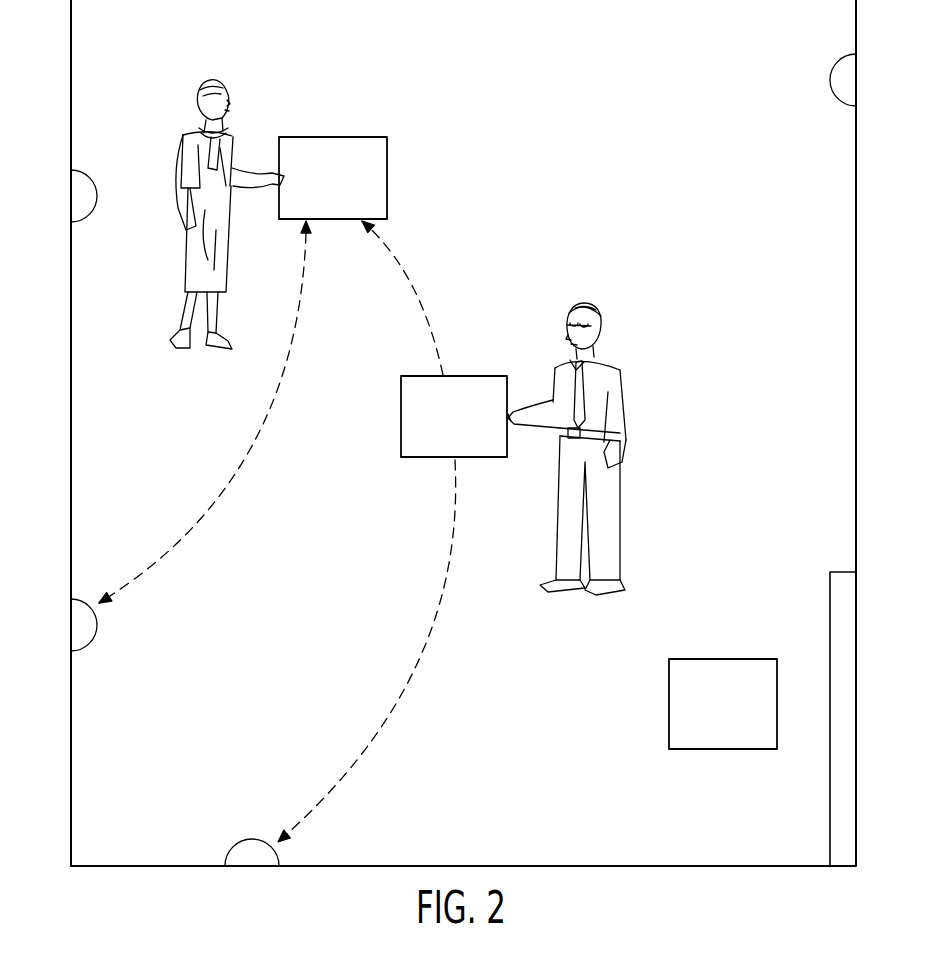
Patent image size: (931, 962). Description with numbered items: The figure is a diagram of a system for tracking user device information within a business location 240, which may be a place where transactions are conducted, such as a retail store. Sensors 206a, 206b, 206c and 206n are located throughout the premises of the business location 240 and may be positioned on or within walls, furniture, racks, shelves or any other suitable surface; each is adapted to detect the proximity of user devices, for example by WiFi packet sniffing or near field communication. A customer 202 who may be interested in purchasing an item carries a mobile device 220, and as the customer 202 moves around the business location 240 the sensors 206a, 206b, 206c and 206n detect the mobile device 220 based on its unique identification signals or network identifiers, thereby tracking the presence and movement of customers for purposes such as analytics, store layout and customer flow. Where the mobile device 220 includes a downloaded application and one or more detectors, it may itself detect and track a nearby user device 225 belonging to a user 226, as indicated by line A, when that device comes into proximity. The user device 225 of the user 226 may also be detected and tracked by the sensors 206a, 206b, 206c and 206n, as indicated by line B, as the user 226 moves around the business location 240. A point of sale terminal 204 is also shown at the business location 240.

The business location 240 is at (598, 58).
The customer 202 is at (180, 150).
The mobile device 220 is at (389, 198).
The user device 225 is at (400, 442).
The user 226 is at (623, 381).
The POS (point of sale) device 204 is at (749, 750).
The sensor 206a is at (80, 626).
The sensor 206b is at (253, 862).
The sensor 206c is at (848, 80).
The sensor 206n is at (80, 196).
The line A is at (416, 292).
The line B is at (415, 652).